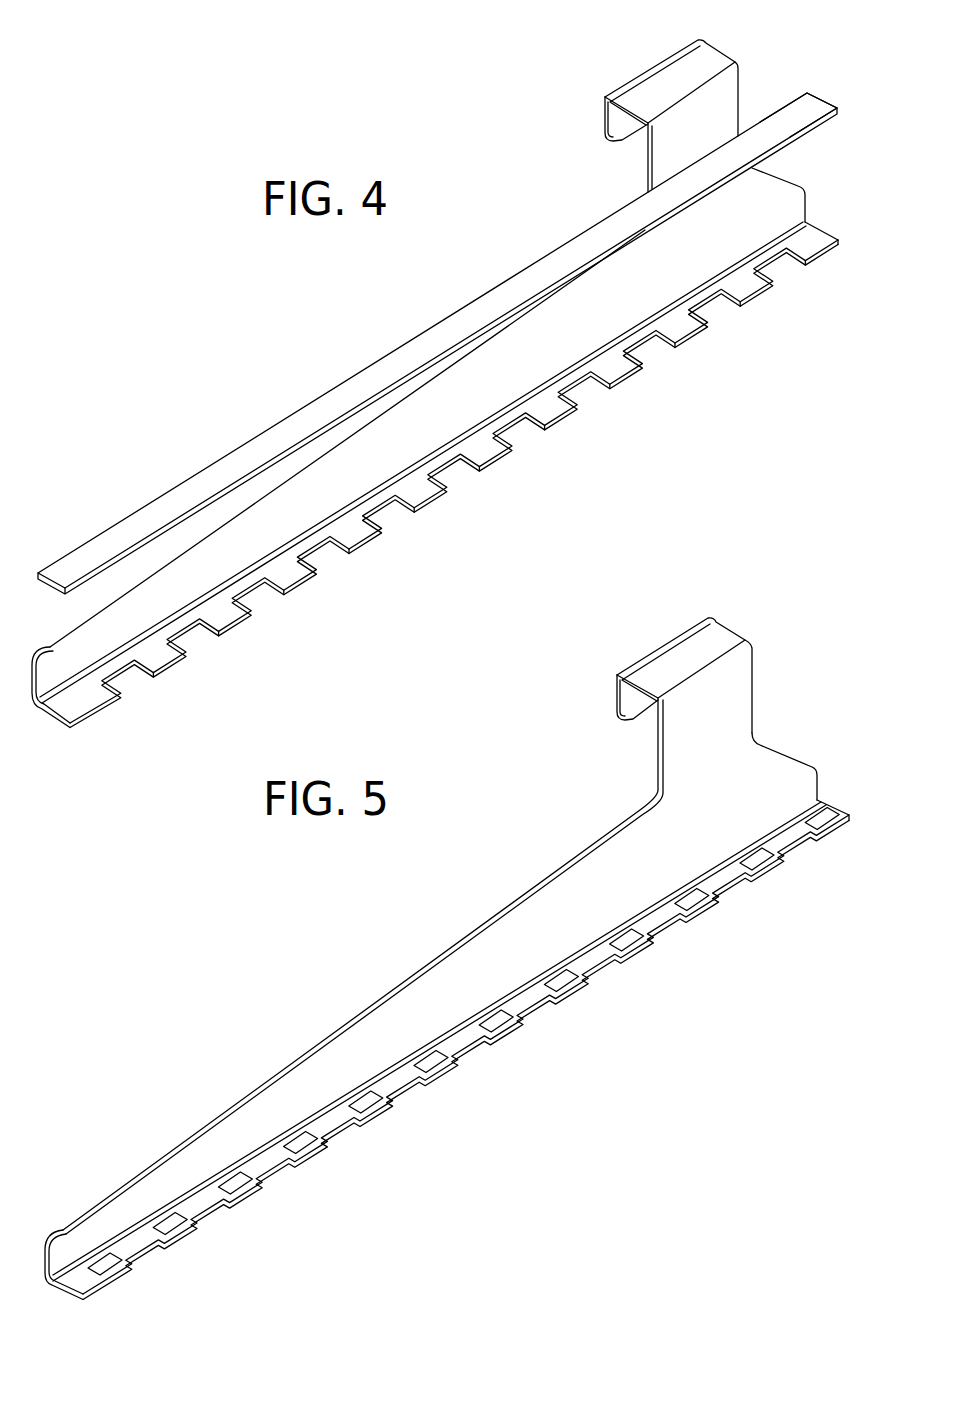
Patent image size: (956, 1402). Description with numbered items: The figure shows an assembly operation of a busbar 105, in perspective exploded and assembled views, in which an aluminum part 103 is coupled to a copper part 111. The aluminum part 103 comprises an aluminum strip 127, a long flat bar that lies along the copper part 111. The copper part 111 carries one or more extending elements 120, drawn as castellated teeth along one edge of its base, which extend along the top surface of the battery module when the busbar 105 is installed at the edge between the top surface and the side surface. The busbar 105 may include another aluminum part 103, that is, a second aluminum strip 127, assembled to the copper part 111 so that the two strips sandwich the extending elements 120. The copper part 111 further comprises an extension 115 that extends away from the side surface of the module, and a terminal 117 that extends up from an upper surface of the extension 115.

In FIG. 4, the busbar 105 is at (218, 306).
In FIG. 5, the busbar 105 is at (325, 921).
In FIG. 4, the aluminum part 103 is at (103, 538).
In FIG. 5, the aluminum part 103 is at (130, 1247).
In FIG. 4, the copper part 111 is at (70, 655).
In FIG. 5, the copper part 111 is at (87, 1230).
In FIG. 4, the extension 115 is at (652, 83).
In FIG. 5, the extension 115 is at (717, 640).
In FIG. 4, the terminal 117 is at (623, 121).
In FIG. 5, the terminal 117 is at (630, 706).
In FIG. 4, the extending elements 120 is at (75, 705).
In FIG. 5, the extending elements 120 is at (467, 1024).
In FIG. 4, the aluminum strip 127 is at (787, 115).
In FIG. 5, the aluminum strip 127 is at (793, 828).